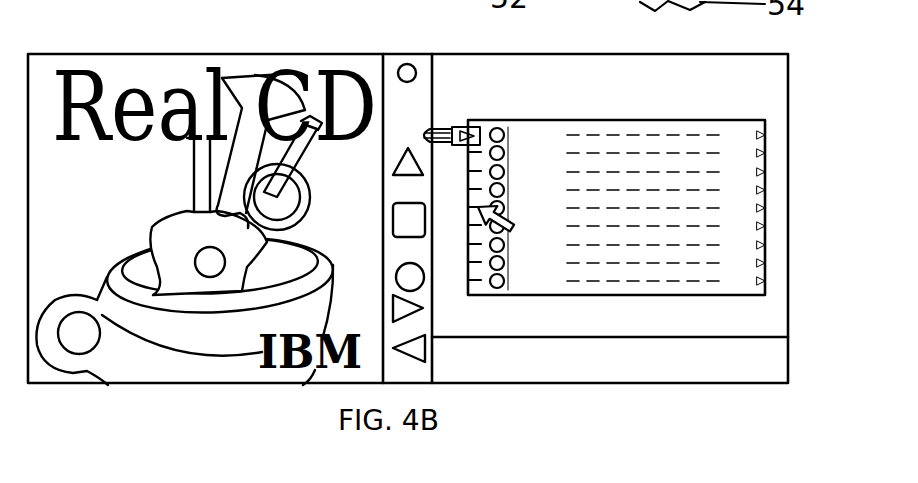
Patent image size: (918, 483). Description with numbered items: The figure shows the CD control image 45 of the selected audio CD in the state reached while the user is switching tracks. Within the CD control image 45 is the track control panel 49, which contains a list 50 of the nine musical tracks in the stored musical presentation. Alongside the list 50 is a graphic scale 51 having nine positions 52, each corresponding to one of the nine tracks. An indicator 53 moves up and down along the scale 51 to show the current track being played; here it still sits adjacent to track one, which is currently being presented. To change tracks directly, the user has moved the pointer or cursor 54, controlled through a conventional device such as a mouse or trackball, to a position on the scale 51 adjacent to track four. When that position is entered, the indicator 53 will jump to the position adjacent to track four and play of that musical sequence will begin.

The CD control image 45 is at (397, 54).
The track control panel 49 is at (690, 72).
The list 50 is at (663, 172).
The graphic scale 51 is at (468, 185).
The positions 52 is at (470, 285).
The indicator 53 is at (468, 123).
The pointer or cursor 54 is at (488, 230).